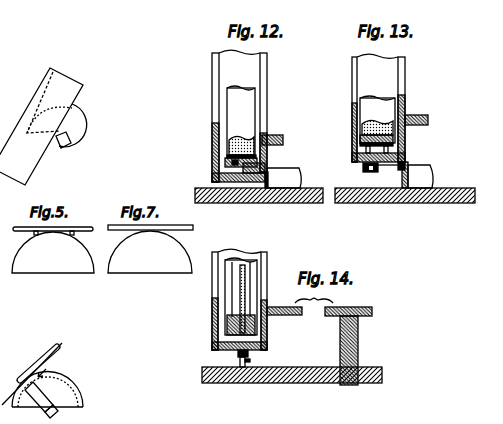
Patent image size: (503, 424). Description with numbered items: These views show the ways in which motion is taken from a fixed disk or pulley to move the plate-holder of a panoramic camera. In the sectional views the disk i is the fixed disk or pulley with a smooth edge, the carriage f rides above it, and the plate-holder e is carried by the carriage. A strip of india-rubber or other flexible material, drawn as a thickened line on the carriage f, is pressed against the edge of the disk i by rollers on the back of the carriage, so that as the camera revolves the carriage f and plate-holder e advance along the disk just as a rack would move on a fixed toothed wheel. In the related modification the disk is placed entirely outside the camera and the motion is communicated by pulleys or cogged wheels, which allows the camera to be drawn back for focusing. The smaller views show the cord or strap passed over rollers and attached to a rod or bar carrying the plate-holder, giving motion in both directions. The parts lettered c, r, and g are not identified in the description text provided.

In FIG. 5, the indicator arm c is at (43, 126).
In FIG. 7, the indicator arm c is at (42, 380).
In FIG. 12, the plate-holder e is at (241, 122).
In FIG. 13, the plate-holder e is at (377, 119).
In FIG. 14, the plate-holder e is at (257, 328).
In FIG. 12, the carriage f is at (222, 165).
In FIG. 13, the carriage f is at (356, 150).
In FIG. 12, the disk i is at (283, 178).
In FIG. 13, the disk i is at (417, 175).
In FIG. 14, the rod r is at (238, 359).
In FIG. 14, the post g is at (357, 345).